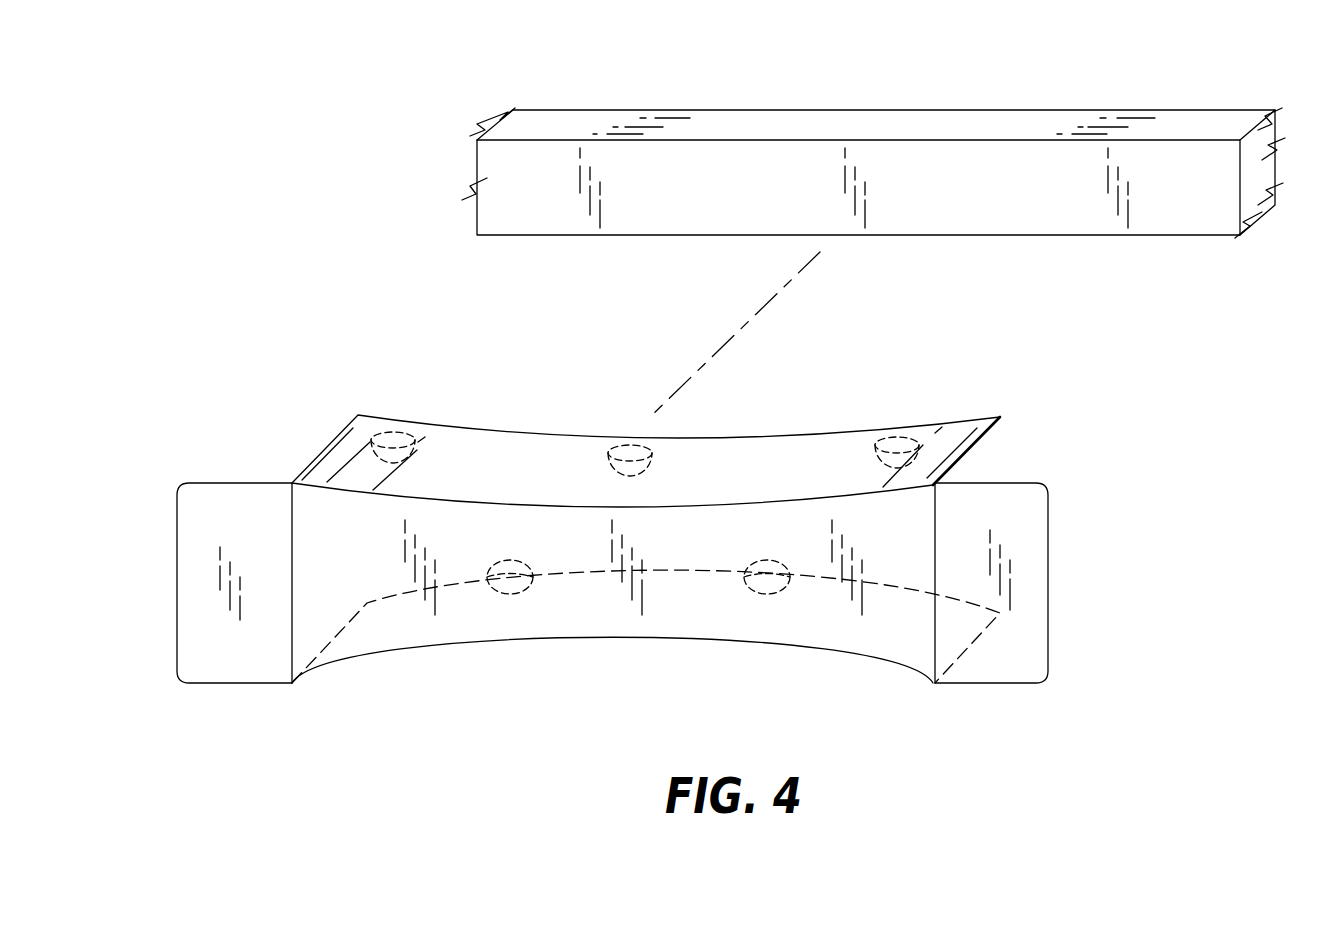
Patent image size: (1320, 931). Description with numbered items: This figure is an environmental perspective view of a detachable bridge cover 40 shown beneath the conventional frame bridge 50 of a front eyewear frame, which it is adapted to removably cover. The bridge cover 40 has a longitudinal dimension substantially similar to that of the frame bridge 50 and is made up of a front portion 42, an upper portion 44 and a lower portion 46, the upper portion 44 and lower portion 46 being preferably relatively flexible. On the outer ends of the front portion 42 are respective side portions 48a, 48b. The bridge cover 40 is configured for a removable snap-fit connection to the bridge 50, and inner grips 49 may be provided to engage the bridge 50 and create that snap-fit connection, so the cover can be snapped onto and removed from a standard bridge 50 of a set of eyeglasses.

The detachable bridge cover 40 is at (628, 683).
The front portion 42 is at (711, 557).
The upper portion 44 is at (832, 450).
The lower portion 46 is at (365, 637).
The side portion 48a is at (1030, 527).
The side portion 48b is at (190, 598).
The inner grips 49 is at (510, 560).
The frame bridge 50 is at (1007, 118).